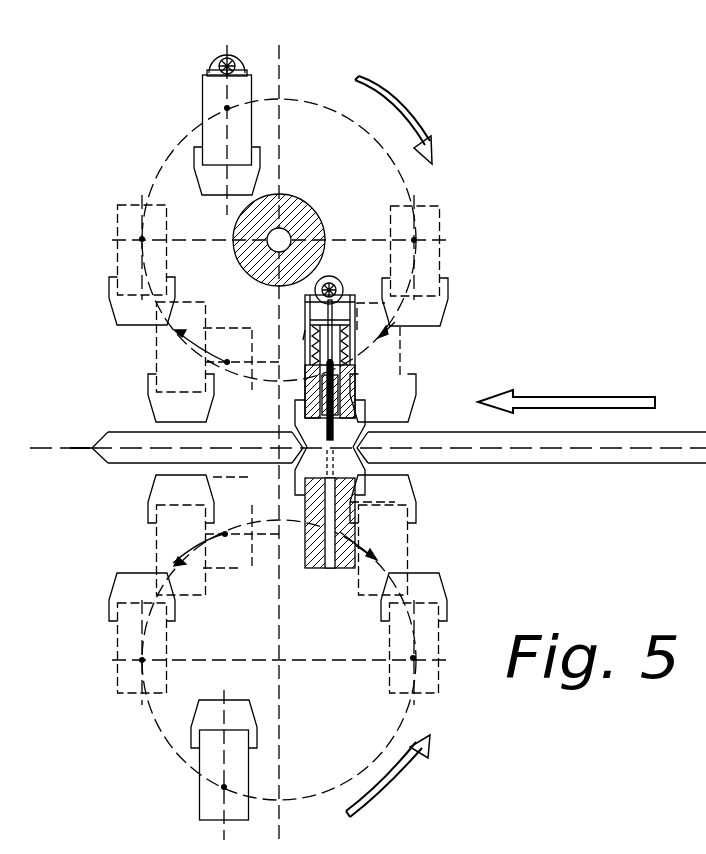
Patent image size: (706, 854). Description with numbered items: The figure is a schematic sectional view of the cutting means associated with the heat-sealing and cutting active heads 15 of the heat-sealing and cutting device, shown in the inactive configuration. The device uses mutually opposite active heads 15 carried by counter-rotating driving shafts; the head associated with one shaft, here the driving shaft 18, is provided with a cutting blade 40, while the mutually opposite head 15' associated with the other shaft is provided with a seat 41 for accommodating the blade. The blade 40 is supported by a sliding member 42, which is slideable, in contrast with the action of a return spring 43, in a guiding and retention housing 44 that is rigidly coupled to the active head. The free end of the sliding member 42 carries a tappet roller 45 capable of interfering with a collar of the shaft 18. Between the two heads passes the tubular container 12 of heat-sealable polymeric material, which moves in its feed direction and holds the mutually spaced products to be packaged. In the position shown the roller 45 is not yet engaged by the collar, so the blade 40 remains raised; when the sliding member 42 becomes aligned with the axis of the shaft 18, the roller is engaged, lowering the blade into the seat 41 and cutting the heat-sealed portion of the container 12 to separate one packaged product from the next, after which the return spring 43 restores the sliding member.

The tubular container 12 is at (530, 458).
The active head 15 is at (304, 448).
The active head with seat 15' is at (298, 541).
The driving shaft 18 is at (300, 212).
The cutting blade 40 is at (345, 434).
The seat 41 is at (333, 548).
The sliding member 42 is at (308, 334).
The return spring 43 is at (308, 348).
The guiding and retention housing 44 is at (395, 322).
The tappet roller 45 is at (240, 58).